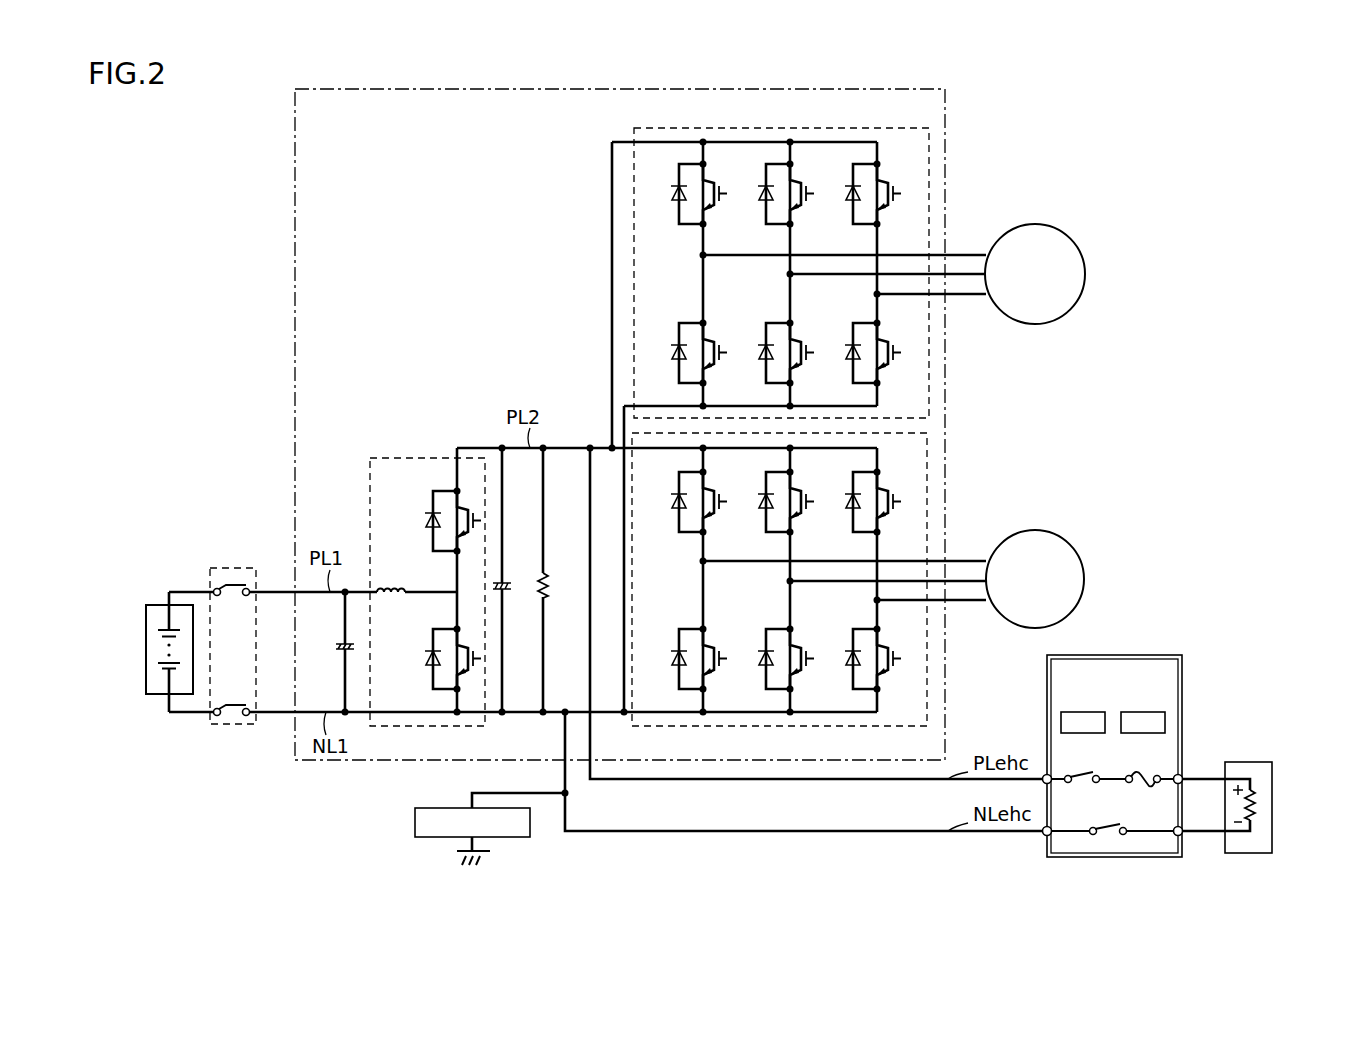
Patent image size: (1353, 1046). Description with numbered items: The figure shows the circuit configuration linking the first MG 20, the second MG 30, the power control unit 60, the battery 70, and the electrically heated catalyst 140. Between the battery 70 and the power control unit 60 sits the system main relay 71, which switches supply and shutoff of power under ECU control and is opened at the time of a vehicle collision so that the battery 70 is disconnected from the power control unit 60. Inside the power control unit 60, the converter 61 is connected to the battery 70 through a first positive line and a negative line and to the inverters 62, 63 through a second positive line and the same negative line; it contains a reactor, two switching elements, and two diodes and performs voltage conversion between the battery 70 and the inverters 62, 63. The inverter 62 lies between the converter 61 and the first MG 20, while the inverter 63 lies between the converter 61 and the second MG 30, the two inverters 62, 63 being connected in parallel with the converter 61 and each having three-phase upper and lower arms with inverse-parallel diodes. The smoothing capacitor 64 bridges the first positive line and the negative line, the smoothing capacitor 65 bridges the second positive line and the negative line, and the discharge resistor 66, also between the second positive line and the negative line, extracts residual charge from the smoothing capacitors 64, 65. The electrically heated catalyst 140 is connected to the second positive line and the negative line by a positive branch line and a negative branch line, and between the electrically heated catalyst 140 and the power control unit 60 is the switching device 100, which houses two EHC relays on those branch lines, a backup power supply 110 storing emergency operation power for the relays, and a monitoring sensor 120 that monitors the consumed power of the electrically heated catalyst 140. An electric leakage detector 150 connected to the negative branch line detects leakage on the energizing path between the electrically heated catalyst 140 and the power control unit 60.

The PCU 60 is at (295, 238).
The converter 61 is at (437, 456).
The inverter 62 is at (700, 728).
The inverter 63 is at (863, 128).
The smoothing capacitor 64 is at (343, 652).
The smoothing capacitor 65 is at (511, 589).
The discharge resistor 66 is at (551, 590).
The battery 70 is at (146, 686).
The system main relay 71 is at (234, 568).
The second MG 30 is at (1053, 226).
The first MG 20 is at (1053, 531).
The switching device 100 is at (1113, 734).
The backup power supply 110 is at (1083, 712).
The monitoring sensor 120 is at (1143, 712).
The EHC 140 is at (1262, 762).
The electric leakage detector 150 is at (415, 824).